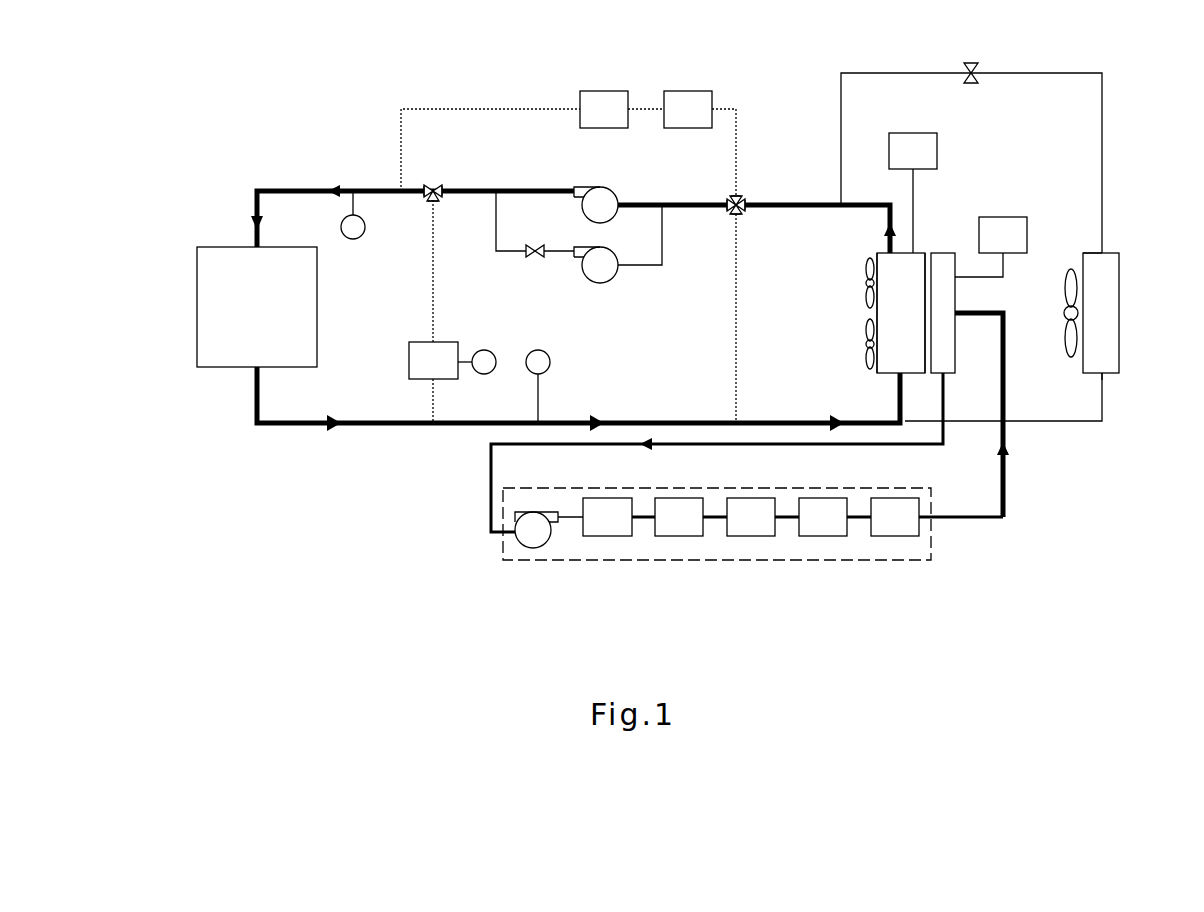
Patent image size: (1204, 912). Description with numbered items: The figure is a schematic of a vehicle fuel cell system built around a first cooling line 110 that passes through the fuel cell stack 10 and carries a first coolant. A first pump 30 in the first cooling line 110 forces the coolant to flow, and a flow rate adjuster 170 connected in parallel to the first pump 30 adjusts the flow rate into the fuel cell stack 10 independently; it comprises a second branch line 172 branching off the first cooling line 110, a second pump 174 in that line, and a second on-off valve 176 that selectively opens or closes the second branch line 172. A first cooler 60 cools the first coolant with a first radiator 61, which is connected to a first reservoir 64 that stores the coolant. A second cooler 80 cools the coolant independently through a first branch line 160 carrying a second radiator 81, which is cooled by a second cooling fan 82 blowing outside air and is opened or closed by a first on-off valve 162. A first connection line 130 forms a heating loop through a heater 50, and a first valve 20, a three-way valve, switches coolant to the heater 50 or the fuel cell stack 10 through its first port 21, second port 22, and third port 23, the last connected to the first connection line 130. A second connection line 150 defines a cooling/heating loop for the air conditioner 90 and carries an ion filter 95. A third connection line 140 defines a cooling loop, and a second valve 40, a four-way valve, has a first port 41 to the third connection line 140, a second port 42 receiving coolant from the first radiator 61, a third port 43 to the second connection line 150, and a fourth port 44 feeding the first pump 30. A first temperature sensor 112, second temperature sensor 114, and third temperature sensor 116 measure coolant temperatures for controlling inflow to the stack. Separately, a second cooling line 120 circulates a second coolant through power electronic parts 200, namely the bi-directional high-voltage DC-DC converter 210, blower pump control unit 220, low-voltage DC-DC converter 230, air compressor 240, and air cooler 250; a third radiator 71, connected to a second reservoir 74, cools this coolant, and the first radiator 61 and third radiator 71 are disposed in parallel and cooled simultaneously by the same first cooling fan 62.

The fuel cell stack 10 is at (197, 305).
The first valve 20 is at (433, 184).
The first port 21 is at (445, 194).
The second port 22 is at (423, 194).
The third port 23 is at (433, 203).
The first pump 30 is at (600, 187).
The second valve 40 is at (748, 199).
The first port 41 is at (733, 214).
The second port 42 is at (745, 208).
The third port 43 is at (733, 197).
The fourth port 44 is at (727, 208).
The heater 50 is at (409, 360).
The first cooler 60 is at (870, 379).
The first radiator 61 is at (912, 373).
The first cooling fan 62 is at (867, 341).
The first reservoir 64 is at (912, 133).
The third radiator 71 is at (955, 343).
The second reservoir 74 is at (1003, 217).
The second cooler 80 is at (1134, 282).
The second radiator 81 is at (1119, 312).
The second cooling fan 82 is at (1061, 312).
The air conditioner 90 is at (603, 90).
The ion filter 95 is at (688, 90).
The first cooling line 110 is at (305, 188).
The first temperature sensor 112 is at (353, 242).
The second temperature sensor 114 is at (538, 350).
The third temperature sensor 116 is at (484, 350).
The second cooling line 120 is at (491, 487).
The first connection line 130 is at (433, 398).
The third connection line 140 is at (736, 358).
The second connection line 150 is at (485, 109).
The first branch line 160 is at (1122, 158).
The first on-off valve 162 is at (971, 63).
The flow rate adjuster 170 is at (624, 310).
The second branch line 172 is at (640, 266).
The second pump 174 is at (601, 284).
The second on-off valve 176 is at (538, 258).
The power electronic parts 200 is at (931, 548).
The bi-directional high-voltage DC-DC converter 210 is at (606, 498).
The blower pump control unit 220 is at (679, 498).
The low-voltage DC-DC converter 230 is at (751, 498).
The air compressor 240 is at (823, 498).
The air cooler 250 is at (895, 498).